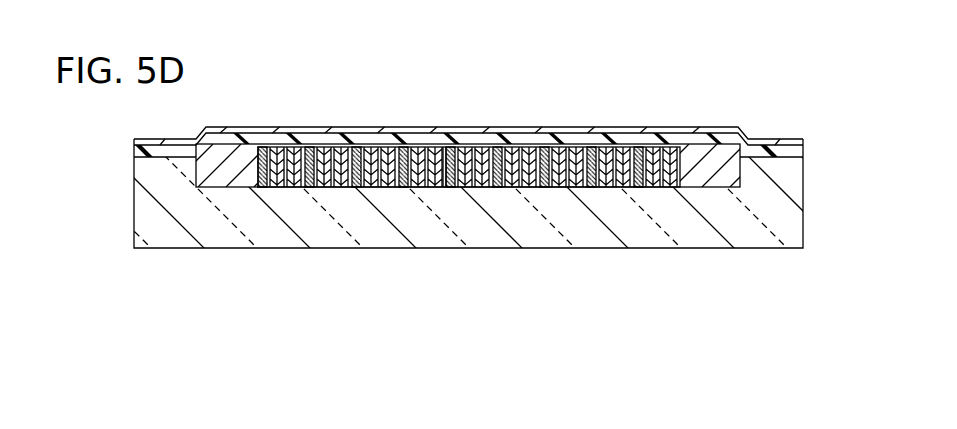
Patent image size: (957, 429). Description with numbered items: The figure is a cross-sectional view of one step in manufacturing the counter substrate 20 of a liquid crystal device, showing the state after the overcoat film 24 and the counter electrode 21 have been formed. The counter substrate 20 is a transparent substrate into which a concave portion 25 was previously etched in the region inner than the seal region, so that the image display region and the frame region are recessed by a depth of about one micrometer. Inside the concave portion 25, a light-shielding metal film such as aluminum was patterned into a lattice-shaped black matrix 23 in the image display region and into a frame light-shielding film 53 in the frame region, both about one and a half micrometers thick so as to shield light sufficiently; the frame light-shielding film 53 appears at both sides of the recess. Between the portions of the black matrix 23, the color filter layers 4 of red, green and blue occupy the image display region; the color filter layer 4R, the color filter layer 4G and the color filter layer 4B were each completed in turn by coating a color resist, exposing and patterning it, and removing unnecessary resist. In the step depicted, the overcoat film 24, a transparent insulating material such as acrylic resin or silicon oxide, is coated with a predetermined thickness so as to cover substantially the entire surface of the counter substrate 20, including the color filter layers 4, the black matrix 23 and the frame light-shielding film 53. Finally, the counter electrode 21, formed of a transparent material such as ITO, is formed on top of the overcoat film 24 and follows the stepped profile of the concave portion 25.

The color filter layers 4 is at (469, 253).
The color filter layer (R) 4R is at (355, 190).
The color filter layer (G) 4G is at (372, 189).
The color filter layer (B) 4B is at (392, 189).
The counter substrate 20 is at (788, 230).
The counter electrode 21 is at (172, 140).
The black matrix 23 is at (457, 229).
The overcoat film 24 is at (137, 151).
The concave portion 25 is at (752, 178).
The frame light-shielding film 53 is at (223, 177).